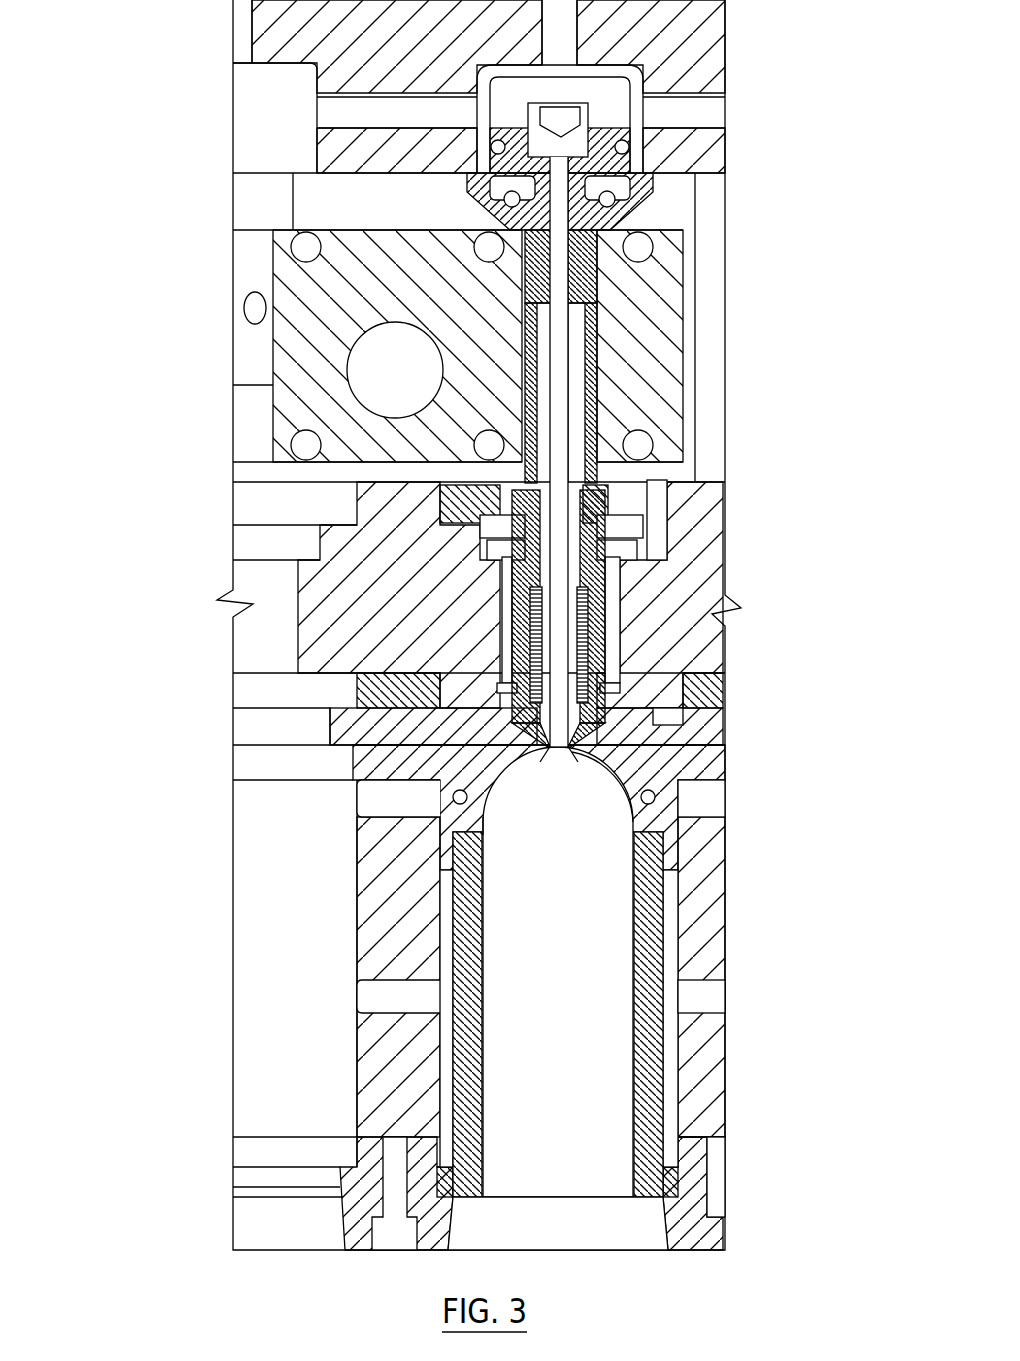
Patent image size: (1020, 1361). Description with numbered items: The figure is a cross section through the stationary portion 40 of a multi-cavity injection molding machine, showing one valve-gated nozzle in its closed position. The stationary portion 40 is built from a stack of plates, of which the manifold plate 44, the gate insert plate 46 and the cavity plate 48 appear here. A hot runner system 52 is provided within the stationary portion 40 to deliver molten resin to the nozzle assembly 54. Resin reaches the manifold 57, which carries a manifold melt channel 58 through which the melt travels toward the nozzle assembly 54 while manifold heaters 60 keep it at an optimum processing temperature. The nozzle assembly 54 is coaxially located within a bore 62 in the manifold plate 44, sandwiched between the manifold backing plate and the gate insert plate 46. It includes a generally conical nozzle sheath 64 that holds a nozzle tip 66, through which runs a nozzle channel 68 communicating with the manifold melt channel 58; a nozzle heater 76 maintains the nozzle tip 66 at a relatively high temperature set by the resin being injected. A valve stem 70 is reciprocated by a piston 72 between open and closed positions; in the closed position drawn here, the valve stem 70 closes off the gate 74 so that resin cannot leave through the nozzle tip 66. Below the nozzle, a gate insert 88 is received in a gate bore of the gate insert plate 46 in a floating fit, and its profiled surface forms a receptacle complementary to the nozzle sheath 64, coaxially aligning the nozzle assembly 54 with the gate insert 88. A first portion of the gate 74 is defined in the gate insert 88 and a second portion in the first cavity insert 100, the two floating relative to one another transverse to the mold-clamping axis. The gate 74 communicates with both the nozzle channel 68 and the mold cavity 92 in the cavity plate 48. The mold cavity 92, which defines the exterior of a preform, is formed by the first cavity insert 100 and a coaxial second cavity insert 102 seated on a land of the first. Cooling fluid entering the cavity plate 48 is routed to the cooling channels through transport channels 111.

The stationary portion 40 is at (155, 881).
The manifold plate 44 is at (710, 573).
The gate insert plate 46 is at (723, 735).
The cavity plate 48 is at (713, 911).
The hot runner system 52 is at (760, 410).
The nozzle assembly 54 is at (597, 695).
The manifold 57 is at (667, 268).
The manifold melt channel 58 is at (390, 388).
The manifold heater 60 is at (650, 443).
The bore 62 is at (505, 625).
The nozzle sheath 64 is at (640, 736).
The nozzle tip 66 is at (550, 755).
The nozzle channel 68 is at (570, 755).
The valve stem 70 is at (562, 337).
The piston 72 is at (577, 137).
The gate 74 is at (559, 768).
The nozzle heater 76 is at (617, 665).
The gate insert 88 is at (660, 735).
The mold cavity 92 is at (560, 1005).
The first cavity insert 100 is at (483, 817).
The second cavity insert 102 is at (483, 1108).
The transport channel 111 is at (720, 997).